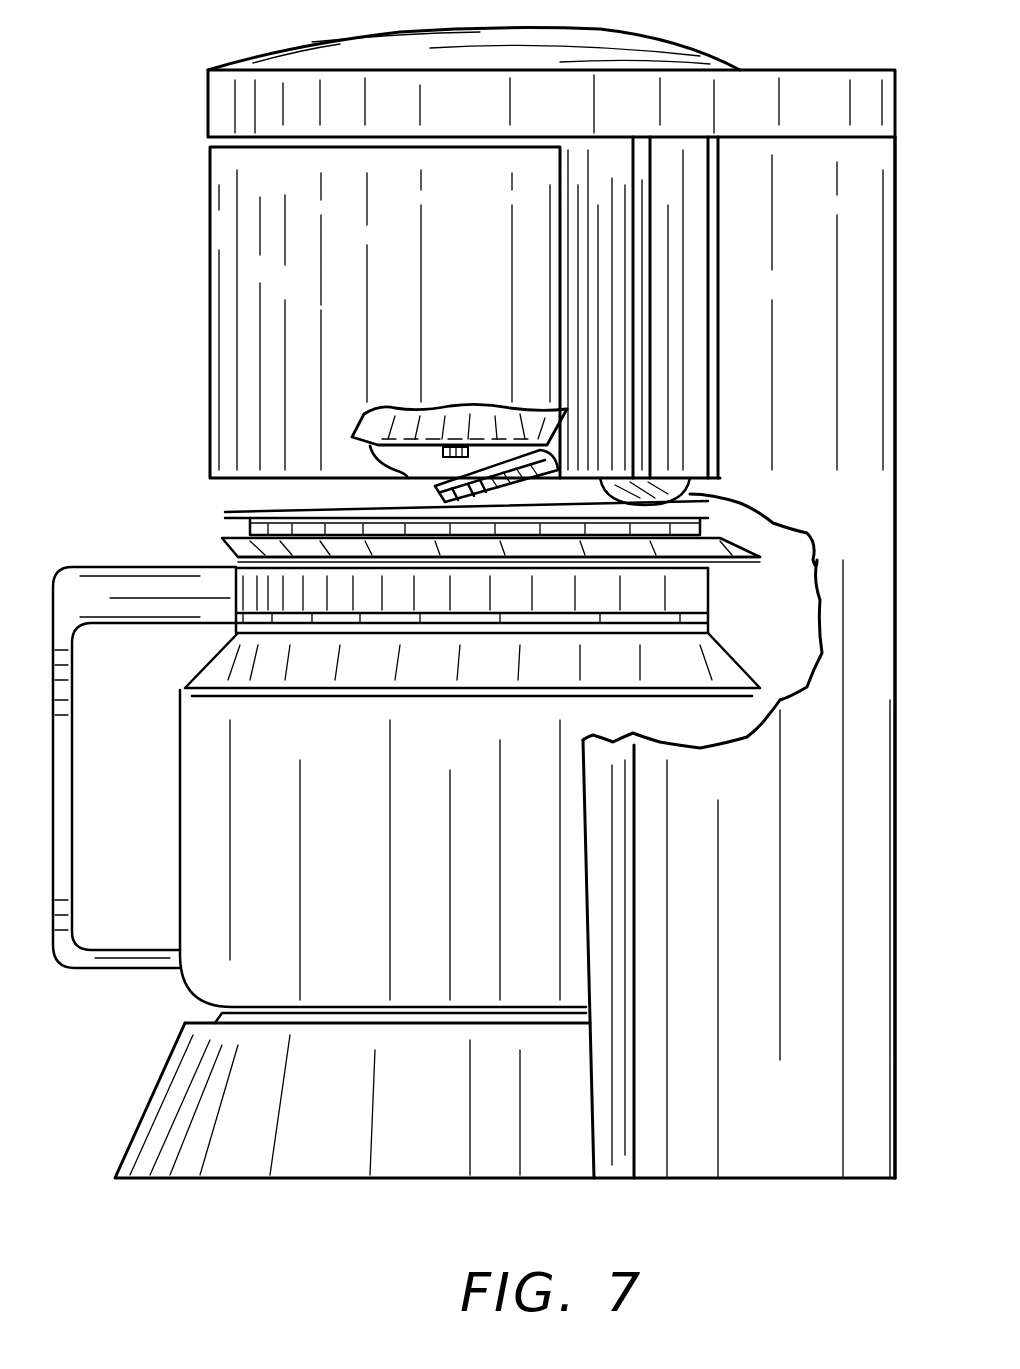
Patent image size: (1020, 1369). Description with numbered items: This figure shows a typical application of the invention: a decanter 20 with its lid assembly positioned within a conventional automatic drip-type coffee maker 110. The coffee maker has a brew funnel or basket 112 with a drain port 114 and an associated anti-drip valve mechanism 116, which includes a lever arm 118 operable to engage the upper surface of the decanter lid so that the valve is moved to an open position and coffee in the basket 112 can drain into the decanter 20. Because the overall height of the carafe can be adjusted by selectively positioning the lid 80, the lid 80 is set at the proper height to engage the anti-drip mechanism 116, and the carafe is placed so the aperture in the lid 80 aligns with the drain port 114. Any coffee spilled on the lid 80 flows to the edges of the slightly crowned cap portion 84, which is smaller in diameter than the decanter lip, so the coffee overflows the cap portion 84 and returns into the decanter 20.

The automatic drip-type coffee maker 110 is at (180, 150).
The brew funnel or basket 112 is at (394, 430).
The drain port 114 is at (458, 443).
The anti-drip valve mechanism 116 is at (433, 492).
The lever arm 118 is at (655, 495).
The cap portion 84 is at (225, 514).
The lid 80 is at (215, 528).
The decanter 20 is at (268, 948).